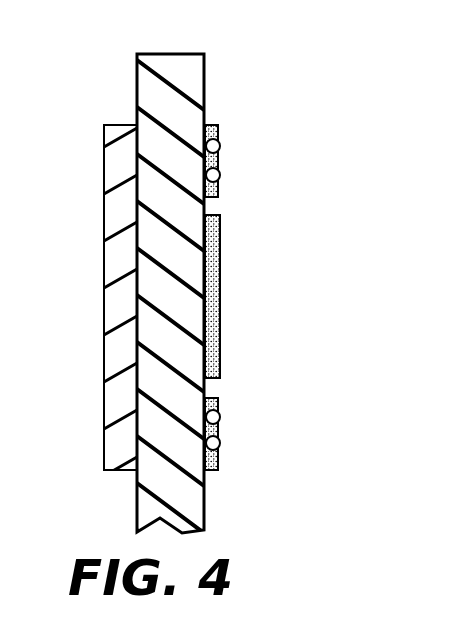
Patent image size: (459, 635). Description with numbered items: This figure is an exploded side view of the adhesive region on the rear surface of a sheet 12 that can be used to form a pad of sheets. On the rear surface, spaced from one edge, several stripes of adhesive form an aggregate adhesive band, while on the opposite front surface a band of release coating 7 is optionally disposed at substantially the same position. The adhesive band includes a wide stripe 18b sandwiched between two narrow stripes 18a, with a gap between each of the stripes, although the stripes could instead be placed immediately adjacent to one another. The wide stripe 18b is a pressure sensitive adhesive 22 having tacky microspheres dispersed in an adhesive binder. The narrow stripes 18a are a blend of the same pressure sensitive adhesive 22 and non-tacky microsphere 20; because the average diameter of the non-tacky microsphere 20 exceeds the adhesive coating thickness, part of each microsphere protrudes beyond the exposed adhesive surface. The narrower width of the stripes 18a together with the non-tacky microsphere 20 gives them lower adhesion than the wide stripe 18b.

The sheet 12 is at (165, 53).
The band of release coating 7 is at (118, 262).
The pressure sensitive adhesive 22 is at (210, 125).
The non-tacky microsphere 20 is at (218, 142).
The narrow stripes 18a is at (250, 174).
The wide stripe 18b is at (242, 305).